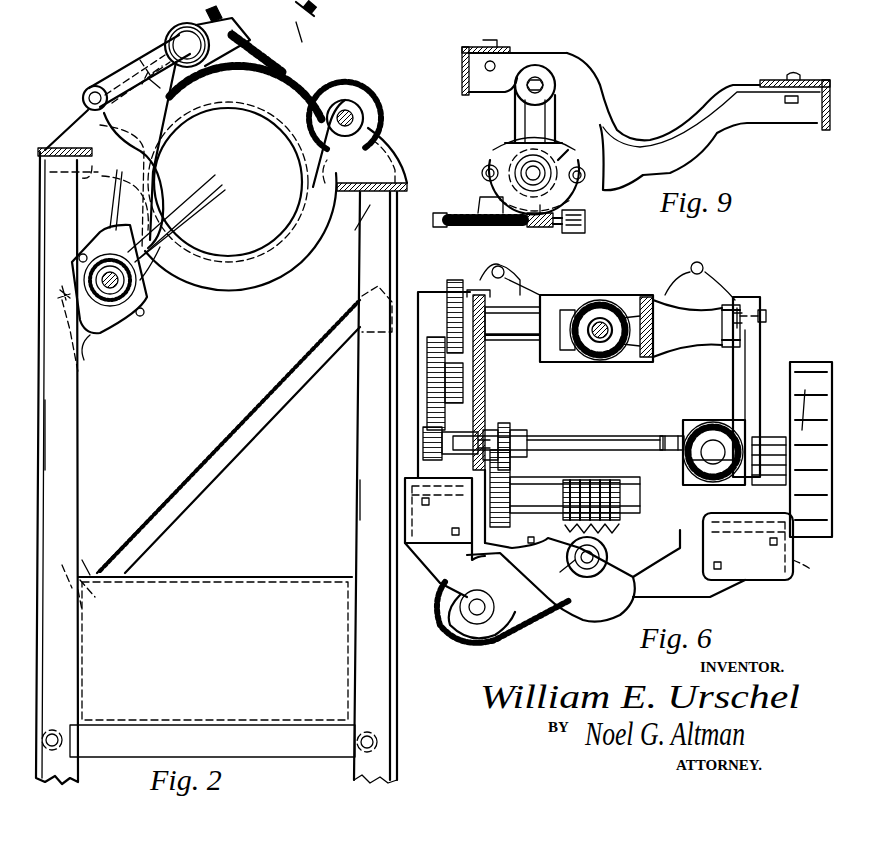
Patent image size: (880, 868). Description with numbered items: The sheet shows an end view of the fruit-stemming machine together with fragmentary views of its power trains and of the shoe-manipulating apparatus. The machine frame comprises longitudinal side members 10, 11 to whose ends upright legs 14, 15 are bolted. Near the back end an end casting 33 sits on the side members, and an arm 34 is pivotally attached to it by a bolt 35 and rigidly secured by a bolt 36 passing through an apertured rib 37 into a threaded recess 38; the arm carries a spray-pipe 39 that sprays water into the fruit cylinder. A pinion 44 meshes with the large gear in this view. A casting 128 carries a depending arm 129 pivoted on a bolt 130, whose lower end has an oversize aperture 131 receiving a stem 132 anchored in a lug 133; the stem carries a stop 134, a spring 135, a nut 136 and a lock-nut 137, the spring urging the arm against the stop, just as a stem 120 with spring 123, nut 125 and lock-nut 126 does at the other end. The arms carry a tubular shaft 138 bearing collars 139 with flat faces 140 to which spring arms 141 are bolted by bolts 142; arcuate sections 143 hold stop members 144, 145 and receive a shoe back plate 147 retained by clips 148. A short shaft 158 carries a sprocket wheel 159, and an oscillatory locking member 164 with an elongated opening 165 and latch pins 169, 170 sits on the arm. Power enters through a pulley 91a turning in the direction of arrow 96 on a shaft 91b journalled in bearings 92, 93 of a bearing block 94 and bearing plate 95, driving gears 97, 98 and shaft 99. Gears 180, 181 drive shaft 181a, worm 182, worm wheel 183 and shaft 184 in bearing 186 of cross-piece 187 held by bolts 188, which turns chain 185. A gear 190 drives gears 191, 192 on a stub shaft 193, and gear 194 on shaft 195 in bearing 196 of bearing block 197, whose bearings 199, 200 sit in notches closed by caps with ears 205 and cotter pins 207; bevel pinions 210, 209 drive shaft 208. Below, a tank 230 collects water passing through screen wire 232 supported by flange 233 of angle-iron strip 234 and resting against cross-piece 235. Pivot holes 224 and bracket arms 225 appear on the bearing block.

In FIG. 2, the longitudinal side member 10 is at (42, 148).
In FIG. 9, the longitudinal side member 10 is at (462, 78).
In FIG. 6, the longitudinal side member 10 is at (516, 457).
In FIG. 2, the longitudinal side member 11 is at (354, 223).
In FIG. 9, the longitudinal side member 11 is at (820, 128).
In FIG. 6, the longitudinal side member 11 is at (796, 560).
In FIG. 2, the upright leg 14 is at (68, 458).
In FIG. 2, the upright leg 15 is at (358, 508).
In FIG. 2, the end casting 33 is at (215, 285).
In FIG. 2, the arm 34 is at (105, 90).
In FIG. 2, the bolt 35 is at (88, 92).
In FIG. 2, the bolt 36 is at (146, 62).
In FIG. 2, the apertured rib 37 is at (118, 78).
In FIG. 2, the threaded recess 38 is at (152, 82).
In FIG. 2, the spray-pipe 39 is at (185, 24).
In FIG. 2, the pinion gear 44 is at (185, 30).
In FIG. 6, the pulley 91a is at (806, 366).
In FIG. 6, the shaft 91b is at (598, 434).
In FIG. 6, the bearing 92 is at (766, 440).
In FIG. 6, the bearing 93 is at (490, 430).
In FIG. 6, the bearing block 94 is at (758, 340).
In FIG. 6, the bearing plate 95 is at (484, 402).
In FIG. 6, the arrow 96 is at (800, 430).
In FIG. 6, the gear 97 is at (662, 440).
In FIG. 6, the gear 98 is at (705, 425).
In FIG. 6, the shaft 99 is at (714, 480).
In FIG. 2, the stem 120 is at (318, 12).
In FIG. 2, the spring 123 is at (224, 12).
In FIG. 2, the nut 125 is at (310, 16).
In FIG. 2, the lock-nut 126 is at (304, 26).
In FIG. 9, the casting 128 is at (668, 133).
In FIG. 9, the arm 129 is at (548, 106).
In FIG. 9, the bolt 130 is at (538, 78).
In FIG. 9, the oversize aperture 131 is at (534, 176).
In FIG. 9, the stem 132 is at (548, 228).
In FIG. 9, the lug 133 is at (586, 220).
In FIG. 9, the stop 134 is at (535, 228).
In FIG. 9, the spring 135 is at (478, 230).
In FIG. 9, the nut 136 is at (470, 232).
In FIG. 9, the lock-nut 137 is at (440, 212).
In FIG. 2, the tubular shaft 138 is at (128, 282).
In FIG. 2, the collar 139 is at (118, 215).
In FIG. 2, the flat face 140 is at (126, 310).
In FIG. 2, the spring arm 141 is at (160, 228).
In FIG. 2, the bolt 142 is at (80, 254).
In FIG. 2, the arcuate section 143 is at (165, 240).
In FIG. 2, the stop member 144 is at (80, 350).
In FIG. 2, the stop member 145 is at (108, 368).
In FIG. 2, the back plate 147 is at (60, 286).
In FIG. 2, the clip 148 is at (185, 235).
In FIG. 9, the short shaft 158 is at (520, 172).
In FIG. 6, the short shaft 158 is at (472, 615).
In FIG. 6, the sprocket wheel 159 is at (492, 632).
In FIG. 9, the oscillatory locking member 164 is at (560, 150).
In FIG. 9, the elongated opening 165 is at (516, 162).
In FIG. 9, the latch pin 169 is at (586, 172).
In FIG. 9, the latch pin 170 is at (481, 172).
In FIG. 6, the gear 180 is at (508, 428).
In FIG. 6, the gear 181 is at (512, 470).
In FIG. 6, the shaft 181a is at (640, 474).
In FIG. 6, the worm 182 is at (596, 482).
In FIG. 6, the worm wheel 183 is at (575, 530).
In FIG. 6, the shaft 184 is at (562, 569).
In FIG. 6, the chain 185 is at (545, 612).
In FIG. 6, the bearing 186 is at (590, 565).
In FIG. 6, the cross-piece 187 is at (689, 563).
In FIG. 6, the bolt 188 is at (456, 526).
In FIG. 6, the gear 190 is at (440, 446).
In FIG. 6, the gear 191 is at (430, 440).
In FIG. 6, the gear 192 is at (450, 390).
In FIG. 6, the stub shaft 193 is at (430, 380).
In FIG. 6, the gear 194 is at (452, 284).
In FIG. 6, the shaft 195 is at (496, 318).
In FIG. 6, the bearing 196 is at (525, 342).
In FIG. 6, the bearing block 197 is at (662, 298).
In FIG. 6, the bearing 199 is at (503, 281).
In FIG. 6, the bearing 200 is at (765, 316).
In FIG. 6, the ear 205 is at (738, 306).
In FIG. 6, the cotter pin 207 is at (696, 328).
In FIG. 6, the shaft 208 is at (598, 345).
In FIG. 6, the bevelled pinion 209 is at (628, 350).
In FIG. 6, the bevelled pinion 210 is at (578, 298).
In FIG. 6, the pivot hole 224 is at (492, 272).
In FIG. 6, the bracket arm 225 is at (512, 280).
In FIG. 2, the tank 230 is at (242, 644).
In FIG. 2, the screen wire 232 is at (232, 422).
In FIG. 2, the flange 233 is at (84, 612).
In FIG. 2, the angle-iron strip 234 is at (86, 568).
In FIG. 2, the cross-piece 235 is at (342, 312).